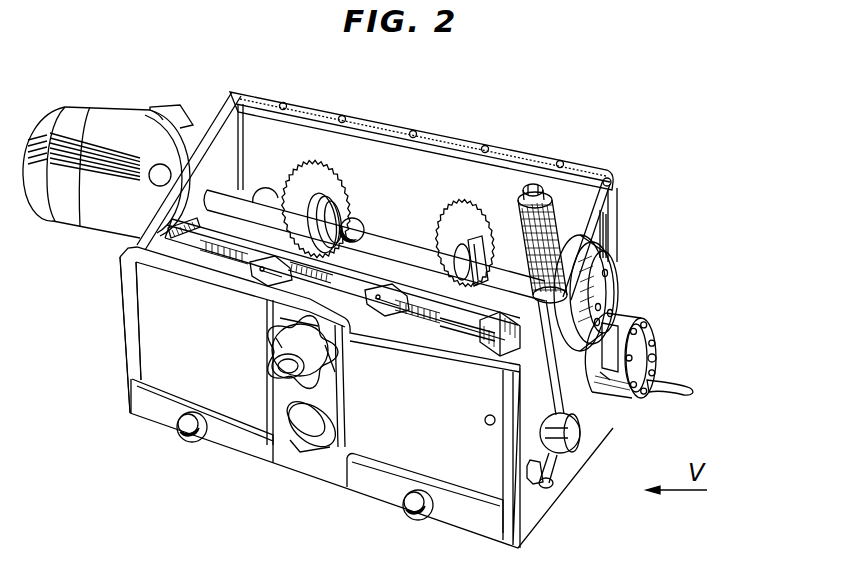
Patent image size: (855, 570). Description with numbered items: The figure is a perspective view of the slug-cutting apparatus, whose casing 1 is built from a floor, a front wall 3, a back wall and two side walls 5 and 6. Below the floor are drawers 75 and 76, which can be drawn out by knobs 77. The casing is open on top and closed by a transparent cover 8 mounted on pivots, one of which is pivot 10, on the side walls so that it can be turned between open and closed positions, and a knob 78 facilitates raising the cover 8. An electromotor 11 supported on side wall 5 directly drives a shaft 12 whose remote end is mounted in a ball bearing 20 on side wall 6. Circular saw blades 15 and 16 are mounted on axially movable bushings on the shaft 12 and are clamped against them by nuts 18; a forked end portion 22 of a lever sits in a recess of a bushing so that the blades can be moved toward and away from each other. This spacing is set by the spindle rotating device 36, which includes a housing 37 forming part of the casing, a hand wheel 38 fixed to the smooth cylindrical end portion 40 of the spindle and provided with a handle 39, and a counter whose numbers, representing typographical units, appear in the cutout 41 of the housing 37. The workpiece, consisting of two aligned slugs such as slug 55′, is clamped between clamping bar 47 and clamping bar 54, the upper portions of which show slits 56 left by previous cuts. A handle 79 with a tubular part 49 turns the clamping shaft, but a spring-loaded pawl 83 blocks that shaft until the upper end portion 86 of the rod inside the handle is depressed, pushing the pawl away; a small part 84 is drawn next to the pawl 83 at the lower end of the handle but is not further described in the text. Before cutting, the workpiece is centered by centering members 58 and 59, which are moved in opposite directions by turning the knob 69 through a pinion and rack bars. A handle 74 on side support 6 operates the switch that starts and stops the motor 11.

The casing 1 is at (116, 329).
The front wall 3 is at (397, 443).
The side wall 5 is at (120, 285).
The side wall 6 is at (502, 437).
The cover 8 is at (421, 165).
The pivot 10 is at (616, 186).
The electromotor 11 is at (112, 122).
The shaft 12 is at (400, 247).
The circular saw blade 15 is at (312, 182).
The circular saw blade 16 is at (474, 218).
The nut 18 is at (343, 212).
The ball bearing 20 is at (619, 270).
The forked end portion 22 is at (478, 250).
The spindle rotating device 36 is at (644, 402).
The housing 37 is at (627, 312).
The hand wheel 38 is at (655, 322).
The handle 39 is at (684, 386).
The cylindrical end portion 40 is at (656, 357).
The cutout 41 is at (608, 382).
The clamping bar 47 is at (460, 322).
The tubular part 49 is at (563, 397).
The clamping bar 54 is at (490, 316).
The slug 55′ is at (256, 293).
The slits 56 is at (310, 296).
The centering member 58 is at (246, 281).
The centering member 59 is at (397, 312).
The knob 69 is at (264, 358).
The handle 74 is at (314, 455).
The drawer 75 is at (140, 404).
The drawer 76 is at (493, 517).
The knob 77 is at (420, 512).
The knob 78 is at (362, 224).
The handle 79 is at (553, 210).
The pawl 83 is at (561, 453).
The nut 84 is at (557, 476).
The upper end portion 86 is at (531, 186).